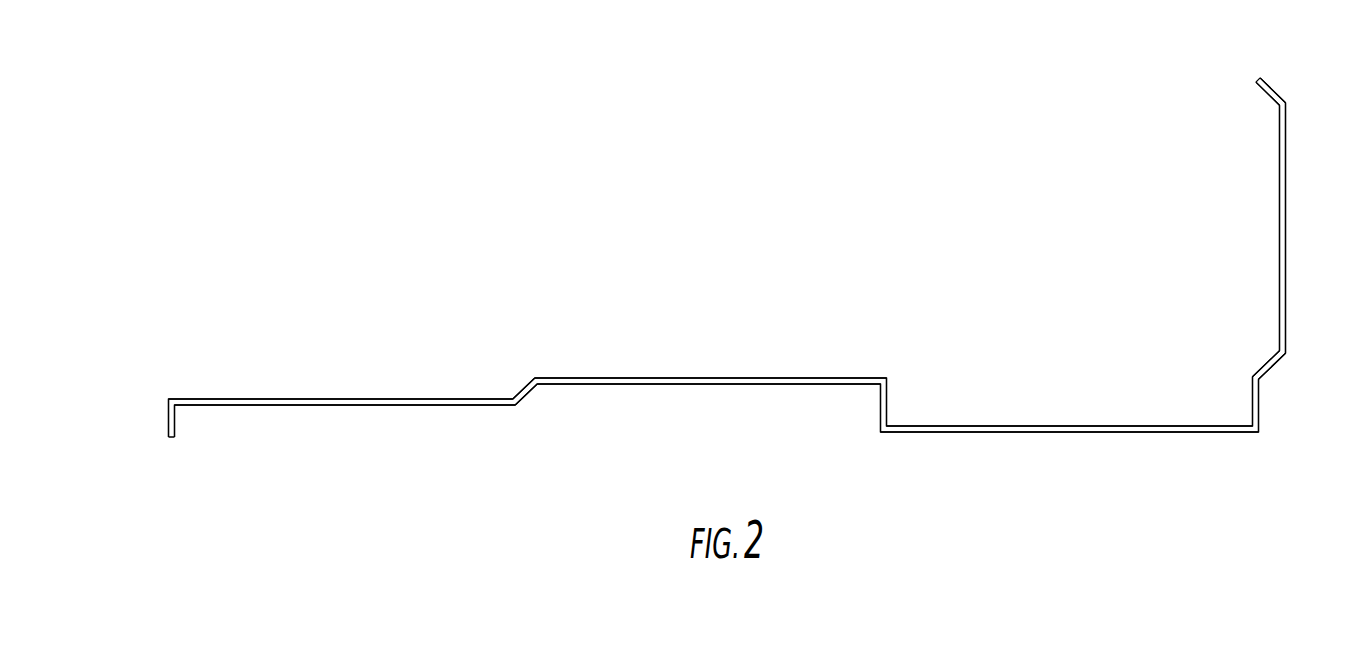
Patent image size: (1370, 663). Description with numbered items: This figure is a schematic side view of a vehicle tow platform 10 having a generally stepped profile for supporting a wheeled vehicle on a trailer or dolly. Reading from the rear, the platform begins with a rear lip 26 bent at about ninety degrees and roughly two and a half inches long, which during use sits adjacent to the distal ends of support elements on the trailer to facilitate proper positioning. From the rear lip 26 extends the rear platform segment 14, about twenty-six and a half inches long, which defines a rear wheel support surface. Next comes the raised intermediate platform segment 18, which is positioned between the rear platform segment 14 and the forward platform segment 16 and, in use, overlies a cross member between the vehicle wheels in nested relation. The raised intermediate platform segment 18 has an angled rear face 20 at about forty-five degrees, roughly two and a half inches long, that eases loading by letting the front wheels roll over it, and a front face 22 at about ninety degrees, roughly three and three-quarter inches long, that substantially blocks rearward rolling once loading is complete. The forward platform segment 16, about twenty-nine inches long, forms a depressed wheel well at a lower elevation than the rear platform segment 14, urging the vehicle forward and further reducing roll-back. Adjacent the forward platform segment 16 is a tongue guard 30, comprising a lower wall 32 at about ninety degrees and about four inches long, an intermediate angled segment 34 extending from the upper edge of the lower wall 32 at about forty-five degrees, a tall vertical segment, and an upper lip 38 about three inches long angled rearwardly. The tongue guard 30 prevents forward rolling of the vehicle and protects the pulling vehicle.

The vehicle tow platform 10 is at (930, 242).
The rear platform segment 14 is at (281, 393).
The forward platform segment 16 is at (972, 435).
The raised intermediate platform segment 18 is at (712, 374).
The angled rear face 20 is at (531, 392).
The front face 22 is at (890, 401).
The rear lip 26 is at (163, 414).
The tongue guard 30 is at (1290, 187).
The lower wall 32 is at (1264, 417).
The intermediate angled segment 34 is at (1256, 368).
The upper lip 38 is at (1280, 94).